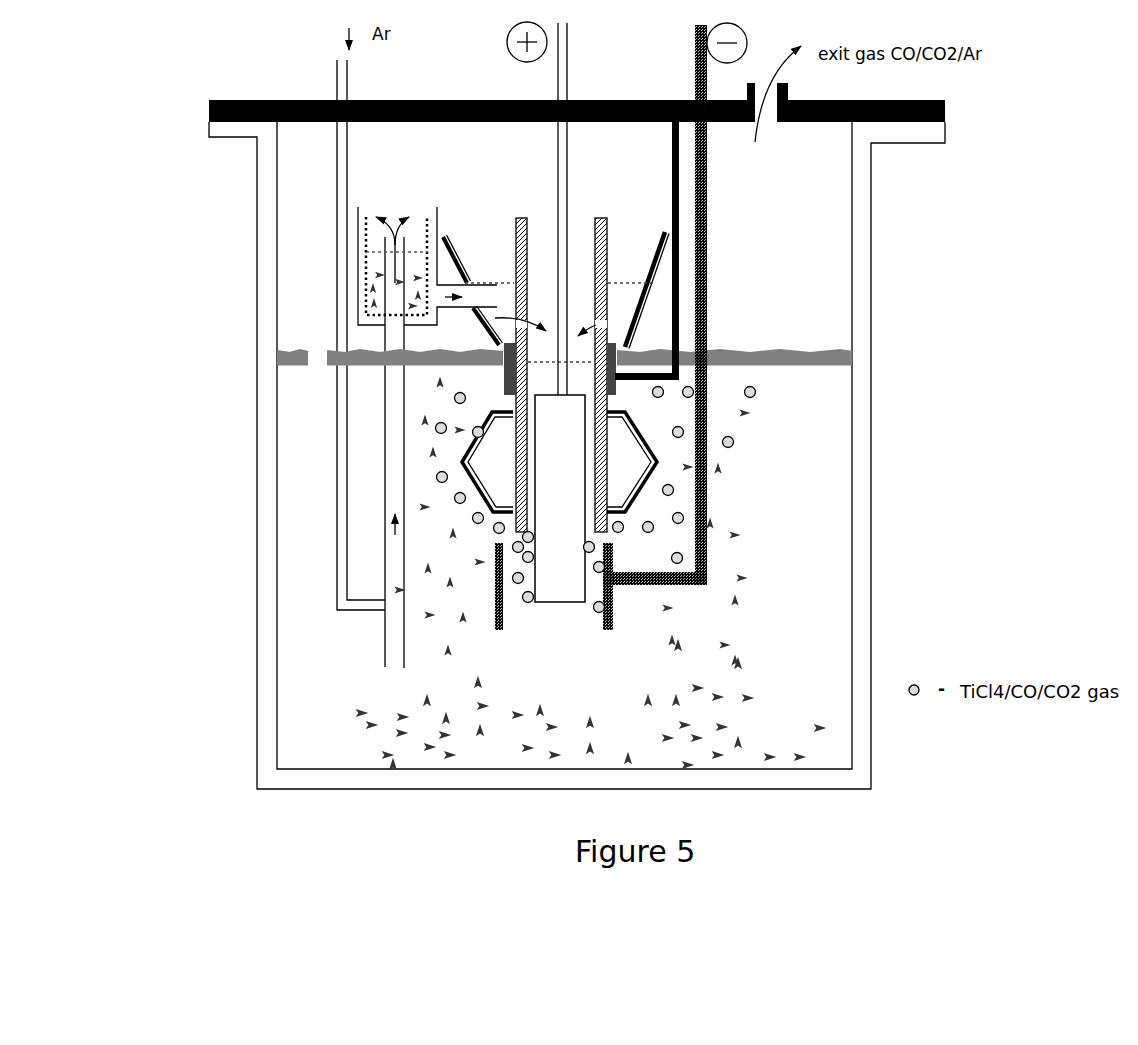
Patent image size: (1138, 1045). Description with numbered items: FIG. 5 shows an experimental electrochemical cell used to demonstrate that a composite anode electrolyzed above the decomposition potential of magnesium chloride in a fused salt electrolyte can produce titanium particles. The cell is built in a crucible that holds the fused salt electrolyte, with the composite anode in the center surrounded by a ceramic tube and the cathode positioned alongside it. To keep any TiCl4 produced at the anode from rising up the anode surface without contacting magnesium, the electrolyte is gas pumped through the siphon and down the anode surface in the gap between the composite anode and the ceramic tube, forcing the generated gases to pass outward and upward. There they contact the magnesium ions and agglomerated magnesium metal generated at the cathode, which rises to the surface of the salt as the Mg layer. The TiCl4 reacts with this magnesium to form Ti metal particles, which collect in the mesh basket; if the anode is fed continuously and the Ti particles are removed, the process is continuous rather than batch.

The element crucible is at (875, 378).
The element siphon is at (385, 630).
The element mesh basket is at (363, 268).
The ceramic tube ceramic is at (605, 407).
The magnesium layer Mg layer is at (827, 357).
The element composite anode is at (580, 603).
The element cathode is at (492, 590).
The titanium particles Ti is at (752, 742).